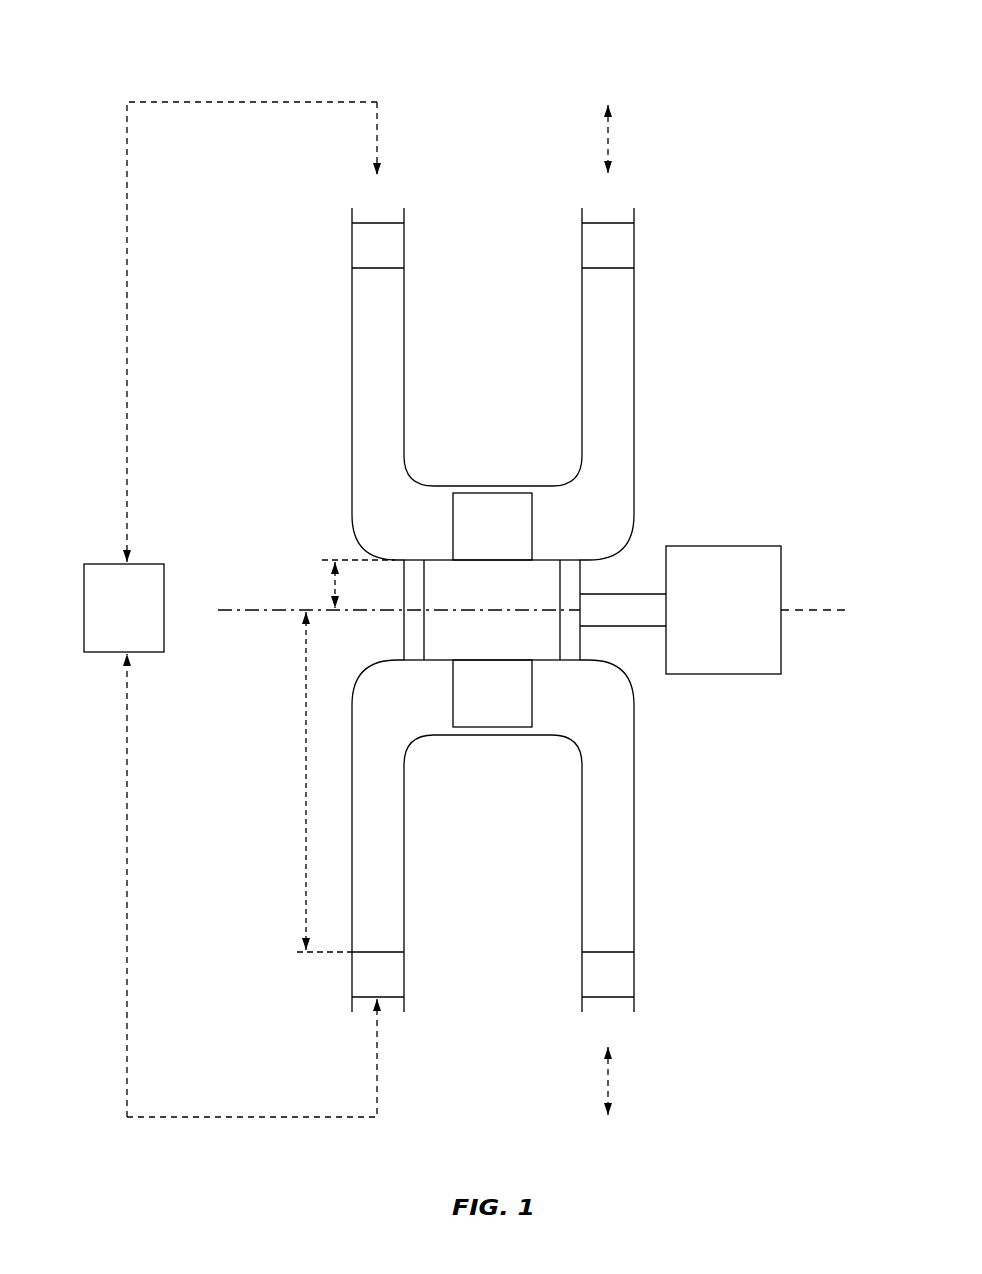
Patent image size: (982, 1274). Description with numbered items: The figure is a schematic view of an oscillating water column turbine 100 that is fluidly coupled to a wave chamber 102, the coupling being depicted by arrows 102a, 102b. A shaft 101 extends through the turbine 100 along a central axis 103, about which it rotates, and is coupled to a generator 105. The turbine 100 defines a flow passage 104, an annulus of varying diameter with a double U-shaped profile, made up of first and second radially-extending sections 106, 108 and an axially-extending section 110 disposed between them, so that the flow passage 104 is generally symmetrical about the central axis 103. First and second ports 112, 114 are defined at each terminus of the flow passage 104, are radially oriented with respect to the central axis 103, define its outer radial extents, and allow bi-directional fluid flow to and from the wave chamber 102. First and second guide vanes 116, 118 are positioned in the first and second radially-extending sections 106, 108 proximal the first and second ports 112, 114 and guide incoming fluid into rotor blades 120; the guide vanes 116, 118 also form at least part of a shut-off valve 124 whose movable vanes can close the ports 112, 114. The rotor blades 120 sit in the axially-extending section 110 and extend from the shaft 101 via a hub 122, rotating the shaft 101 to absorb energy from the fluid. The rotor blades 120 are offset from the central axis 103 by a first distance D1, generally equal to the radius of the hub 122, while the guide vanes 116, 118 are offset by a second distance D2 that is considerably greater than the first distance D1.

The oscillating water column turbine 100 is at (160, 58).
The shaft 101 is at (622, 628).
The wave chamber 102 is at (124, 608).
The arrow 102a is at (127, 243).
The arrow 102b is at (127, 878).
The central axis 103 is at (814, 607).
The flow passage 104 is at (368, 452).
The generator 105 is at (723, 610).
The first radially-extending section 106 is at (387, 358).
The second radially-extending section 108 is at (601, 385).
The axially-extending section 110 is at (421, 505).
The first port 112 is at (404, 208).
The second port 114 is at (634, 208).
The first guide vanes 116 is at (352, 245).
The second guide vanes 118 is at (634, 245).
The rotor blades 120 is at (525, 707).
The hub 122 is at (492, 576).
The shut-off valve 124 is at (328, 307).
The first distance D1 is at (335, 585).
The second distance D2 is at (306, 767).